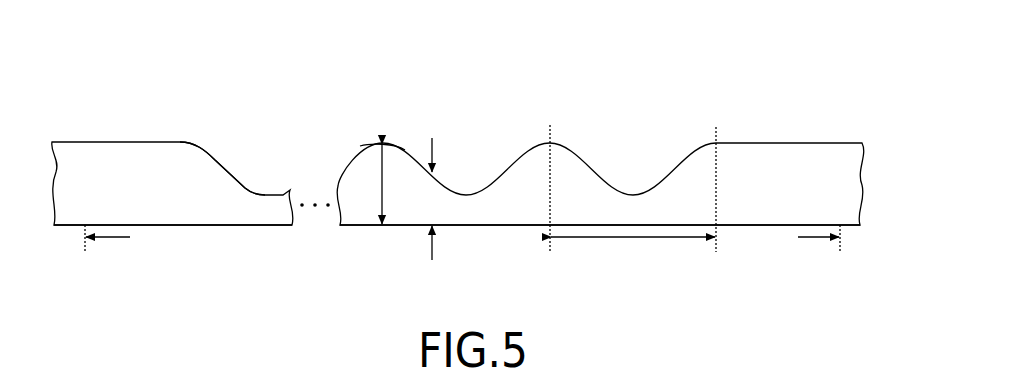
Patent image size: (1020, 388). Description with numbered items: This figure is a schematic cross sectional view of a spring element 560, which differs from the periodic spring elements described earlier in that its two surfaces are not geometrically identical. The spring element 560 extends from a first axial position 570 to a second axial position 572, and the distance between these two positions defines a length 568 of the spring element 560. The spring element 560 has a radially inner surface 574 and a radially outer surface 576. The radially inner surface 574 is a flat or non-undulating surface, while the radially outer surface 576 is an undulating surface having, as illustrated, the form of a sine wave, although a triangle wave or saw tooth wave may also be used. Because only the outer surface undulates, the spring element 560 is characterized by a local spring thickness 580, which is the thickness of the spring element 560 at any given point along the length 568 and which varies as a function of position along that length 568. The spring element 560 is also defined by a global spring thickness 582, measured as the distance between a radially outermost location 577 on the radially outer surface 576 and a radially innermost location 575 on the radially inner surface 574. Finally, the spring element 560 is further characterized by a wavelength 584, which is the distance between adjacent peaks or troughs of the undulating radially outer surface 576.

The spring element 560 is at (458, 158).
The first axial position 570 is at (75, 142).
The second axial position 572 is at (785, 143).
The radially inner surface 574 is at (203, 225).
The radially innermost location 575 is at (382, 225).
The radially outer surface 576 is at (213, 157).
The radially outermost location 577 is at (384, 142).
The local spring thickness 580 is at (432, 140).
The global spring thickness 582 is at (380, 180).
The wavelength 584 is at (632, 240).
The length 568 is at (806, 240).